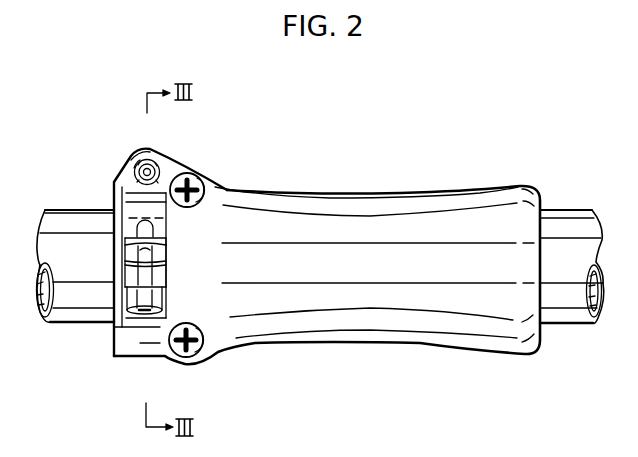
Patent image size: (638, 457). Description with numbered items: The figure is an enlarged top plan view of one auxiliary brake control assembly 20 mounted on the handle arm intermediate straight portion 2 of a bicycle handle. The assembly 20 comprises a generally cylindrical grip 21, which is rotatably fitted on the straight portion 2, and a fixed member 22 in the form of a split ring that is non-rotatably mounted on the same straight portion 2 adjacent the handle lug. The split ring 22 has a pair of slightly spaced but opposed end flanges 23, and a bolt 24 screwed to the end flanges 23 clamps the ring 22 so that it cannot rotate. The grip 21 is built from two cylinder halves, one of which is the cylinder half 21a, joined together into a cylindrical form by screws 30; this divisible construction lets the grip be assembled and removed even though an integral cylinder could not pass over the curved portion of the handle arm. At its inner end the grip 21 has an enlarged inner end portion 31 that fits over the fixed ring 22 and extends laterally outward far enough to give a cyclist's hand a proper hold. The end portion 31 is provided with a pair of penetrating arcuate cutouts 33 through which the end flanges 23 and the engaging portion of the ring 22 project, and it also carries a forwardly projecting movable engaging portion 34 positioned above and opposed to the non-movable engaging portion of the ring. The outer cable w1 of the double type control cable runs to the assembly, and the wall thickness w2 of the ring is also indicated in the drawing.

The handle arm intermediate straight portion 2 is at (72, 208).
The auxiliary brake control assembly 20 is at (359, 225).
The cylindrical grip 21 is at (371, 190).
The cylinder half 21a is at (417, 223).
The fixed member 22 is at (152, 199).
The end flanges 23 is at (156, 280).
The bolt 24 is at (140, 314).
The screws 30 is at (203, 175).
The enlarged inner end portion 31 is at (152, 342).
The arcuate cutouts 33 is at (141, 251).
The movable engaging portion 34 is at (148, 150).
The outer cable w1 is at (134, 168).
The wall thickness w2 is at (143, 160).